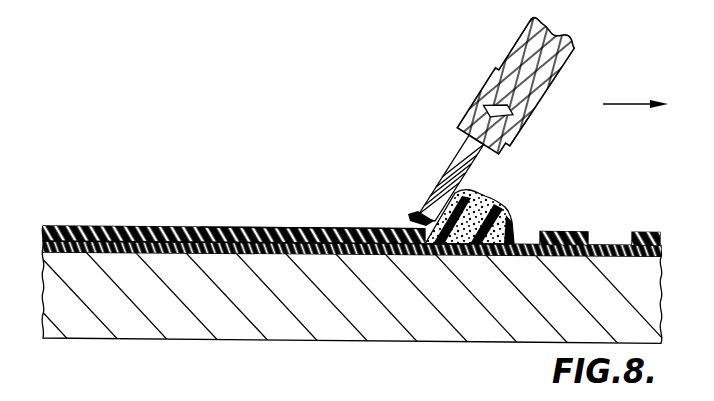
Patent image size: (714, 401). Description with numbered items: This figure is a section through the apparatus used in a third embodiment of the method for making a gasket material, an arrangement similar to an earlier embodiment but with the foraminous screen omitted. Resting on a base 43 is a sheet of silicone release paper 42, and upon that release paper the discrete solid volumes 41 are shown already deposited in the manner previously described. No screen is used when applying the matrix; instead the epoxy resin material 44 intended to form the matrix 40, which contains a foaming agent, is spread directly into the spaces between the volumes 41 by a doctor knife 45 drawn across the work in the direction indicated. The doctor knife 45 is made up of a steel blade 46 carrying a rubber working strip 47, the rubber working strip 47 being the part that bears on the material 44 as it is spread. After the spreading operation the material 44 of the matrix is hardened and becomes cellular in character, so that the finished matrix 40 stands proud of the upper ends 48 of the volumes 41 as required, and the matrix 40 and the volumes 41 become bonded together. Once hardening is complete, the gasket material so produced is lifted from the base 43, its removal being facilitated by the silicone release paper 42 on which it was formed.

The matrix 40 is at (252, 233).
The discrete solid volumes 41 is at (213, 230).
The silicone release paper 42 is at (113, 228).
The base 43 is at (378, 318).
The material of the matrix 44 is at (513, 226).
The doctor knife 45 is at (547, 76).
The steel blade 46 is at (477, 158).
The rubber working strip 47 is at (412, 218).
The upper ends of the volumes 48 is at (214, 234).